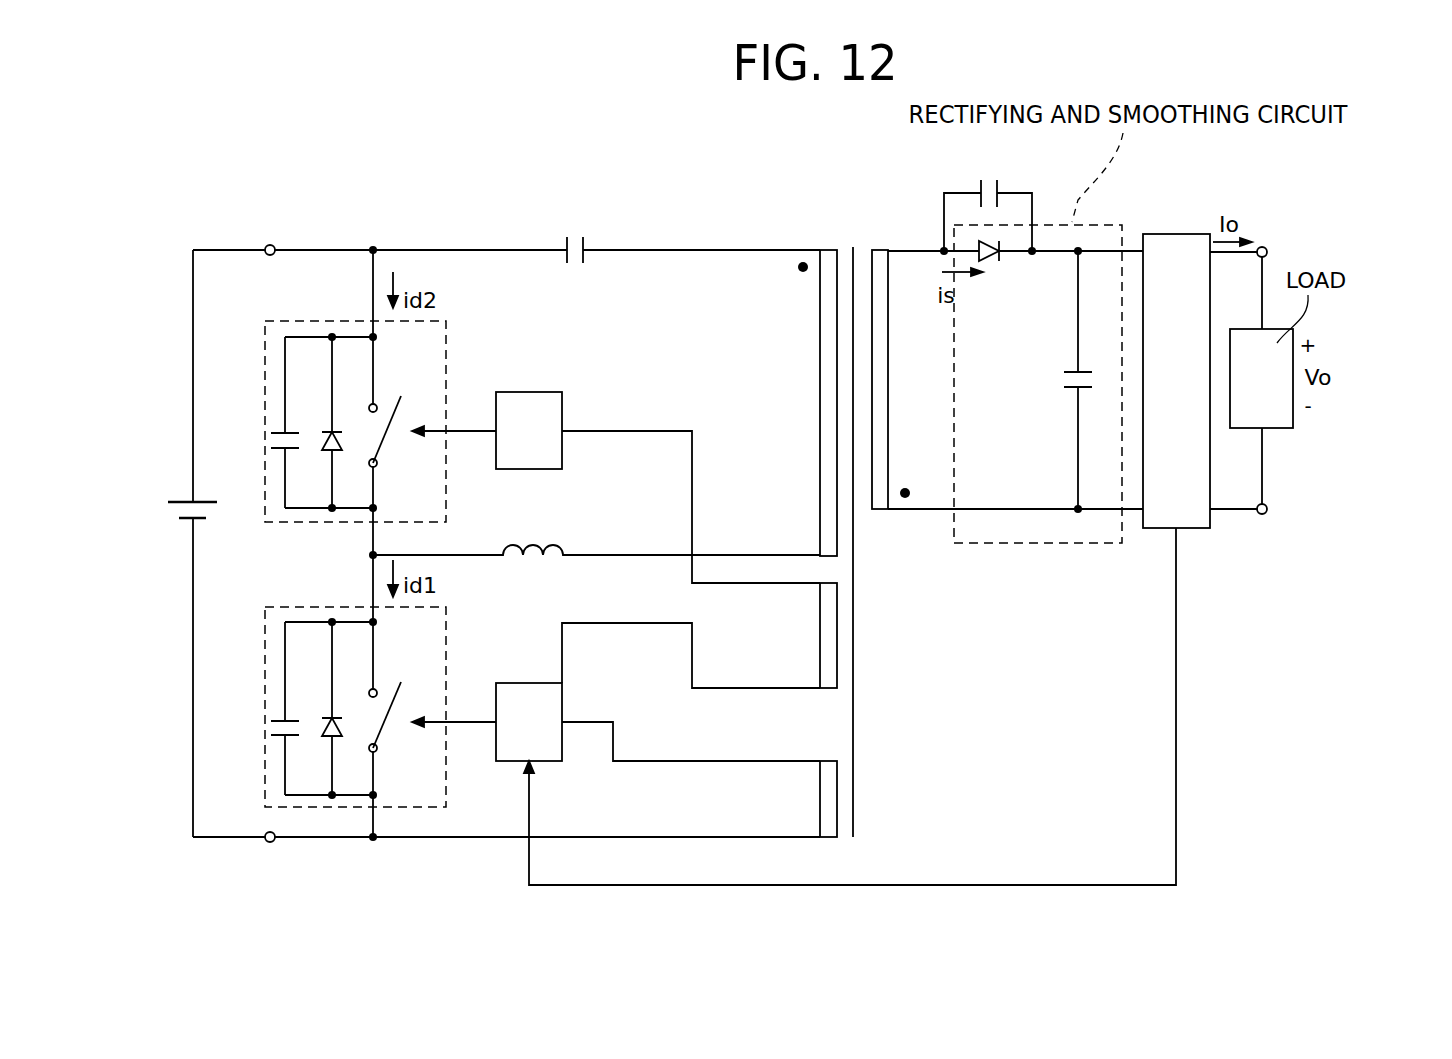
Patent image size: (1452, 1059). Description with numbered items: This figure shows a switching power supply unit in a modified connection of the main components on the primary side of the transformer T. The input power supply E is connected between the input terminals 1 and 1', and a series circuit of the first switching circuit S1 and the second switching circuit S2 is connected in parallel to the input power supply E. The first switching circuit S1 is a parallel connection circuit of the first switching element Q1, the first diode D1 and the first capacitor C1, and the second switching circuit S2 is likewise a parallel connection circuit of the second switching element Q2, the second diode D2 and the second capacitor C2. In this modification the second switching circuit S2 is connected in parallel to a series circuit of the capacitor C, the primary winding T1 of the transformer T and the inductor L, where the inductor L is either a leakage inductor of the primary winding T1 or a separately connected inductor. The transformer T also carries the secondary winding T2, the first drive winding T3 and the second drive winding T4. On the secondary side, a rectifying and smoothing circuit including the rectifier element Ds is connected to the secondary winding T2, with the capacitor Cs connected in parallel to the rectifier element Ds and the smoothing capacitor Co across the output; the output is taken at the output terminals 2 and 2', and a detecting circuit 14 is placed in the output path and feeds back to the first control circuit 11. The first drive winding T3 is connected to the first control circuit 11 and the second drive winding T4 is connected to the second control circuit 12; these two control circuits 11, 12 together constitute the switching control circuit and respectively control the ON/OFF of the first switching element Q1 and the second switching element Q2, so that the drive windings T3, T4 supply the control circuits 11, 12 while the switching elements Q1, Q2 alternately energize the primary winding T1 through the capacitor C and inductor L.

The input terminal 1 is at (270, 235).
The input terminal 1' is at (272, 852).
The output terminal 2 is at (1266, 238).
The output terminal 2' is at (1268, 527).
The first control circuit 11 is at (562, 683).
The second control circuit 12 is at (558, 392).
The detecting circuit 14 is at (1176, 234).
The first switching circuit S1 is at (447, 607).
The second switching circuit S2 is at (448, 320).
The first switching element Q1 is at (391, 734).
The second switching element Q2 is at (391, 448).
The first diode D1 is at (343, 708).
The second diode D2 is at (343, 422).
The first capacitor C1 is at (313, 578).
The second capacitor C2 is at (313, 290).
The capacitor C is at (574, 237).
The inductor L is at (596, 535).
The transformer T is at (852, 530).
The primary winding T1 is at (812, 403).
The secondary winding T2 is at (896, 379).
The first drive winding T3 is at (811, 799).
The second drive winding T4 is at (811, 635).
The capacitor Cs is at (988, 201).
The rectifier element Ds is at (1003, 272).
The smoothing capacitor Co is at (1061, 380).
The input power supply E is at (177, 500).